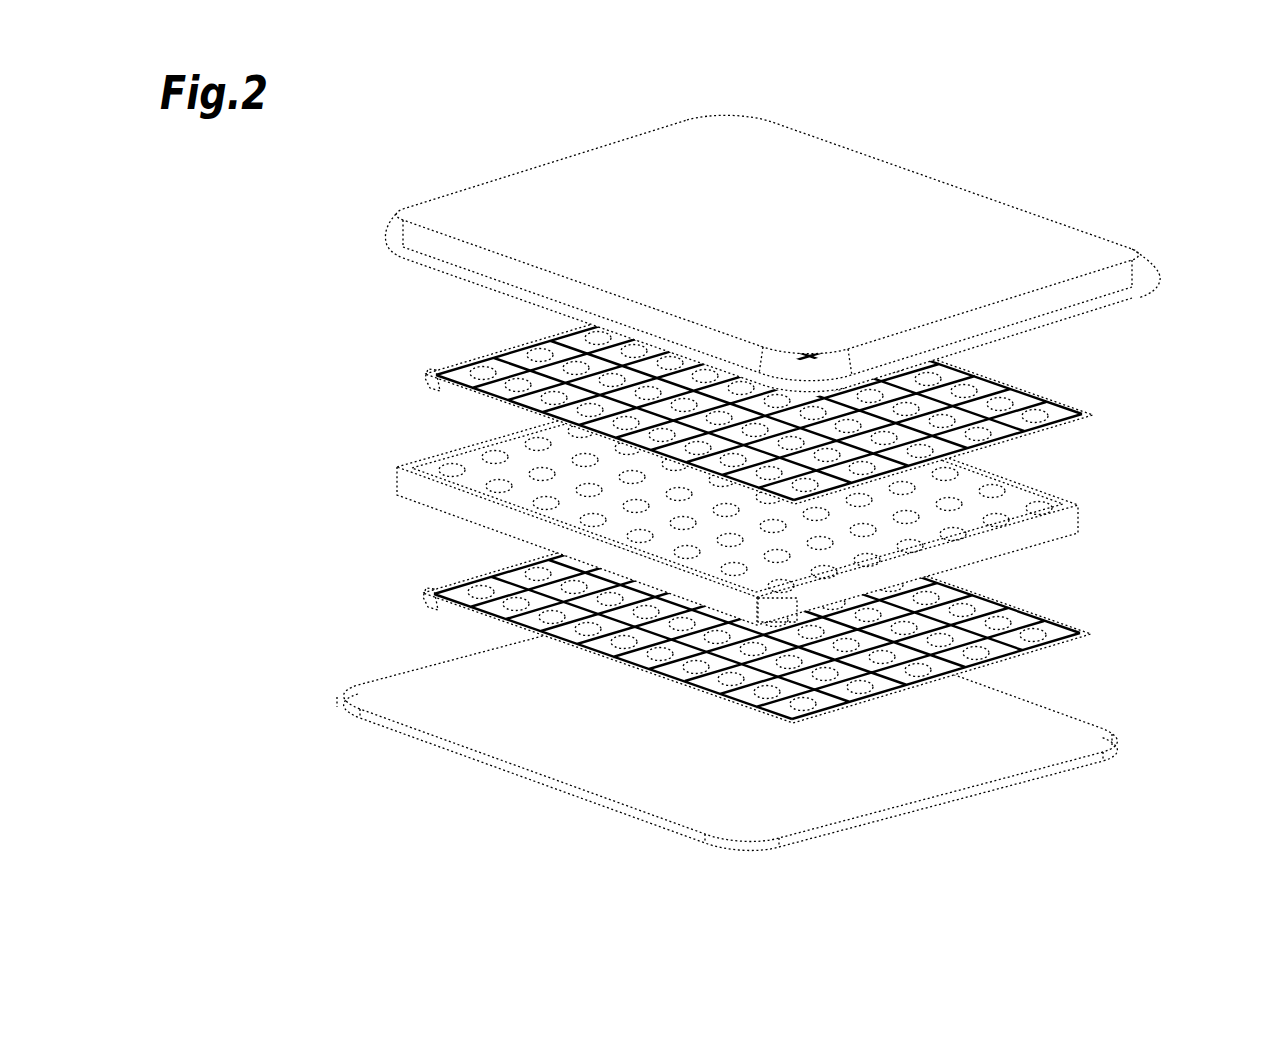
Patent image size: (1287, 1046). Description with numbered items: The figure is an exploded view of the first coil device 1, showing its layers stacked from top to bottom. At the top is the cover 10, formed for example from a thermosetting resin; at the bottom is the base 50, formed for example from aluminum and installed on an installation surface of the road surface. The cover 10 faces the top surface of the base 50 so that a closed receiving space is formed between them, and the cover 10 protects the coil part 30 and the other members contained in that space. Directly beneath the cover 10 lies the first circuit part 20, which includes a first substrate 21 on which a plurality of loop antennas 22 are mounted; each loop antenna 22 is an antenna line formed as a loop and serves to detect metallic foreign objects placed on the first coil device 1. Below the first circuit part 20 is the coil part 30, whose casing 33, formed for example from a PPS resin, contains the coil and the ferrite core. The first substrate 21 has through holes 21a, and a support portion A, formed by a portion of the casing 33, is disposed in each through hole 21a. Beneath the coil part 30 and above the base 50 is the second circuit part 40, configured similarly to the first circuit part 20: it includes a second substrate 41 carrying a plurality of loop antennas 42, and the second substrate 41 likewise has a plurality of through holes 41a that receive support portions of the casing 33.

The first coil device 1 is at (1198, 199).
The cover 10 is at (1016, 208).
The first circuit part 20 is at (757, 394).
The first substrate 21 is at (1032, 395).
The through hole 21a is at (1052, 427).
The loop antenna 22 is at (434, 375).
The coil part 30 is at (749, 500).
The casing 33 is at (1055, 500).
The support portion A is at (447, 464).
The second circuit part 40 is at (758, 613).
The second substrate 41 is at (767, 613).
The through hole 41a is at (780, 613).
The loop antenna 42 is at (397, 589).
The base 50 is at (1115, 738).